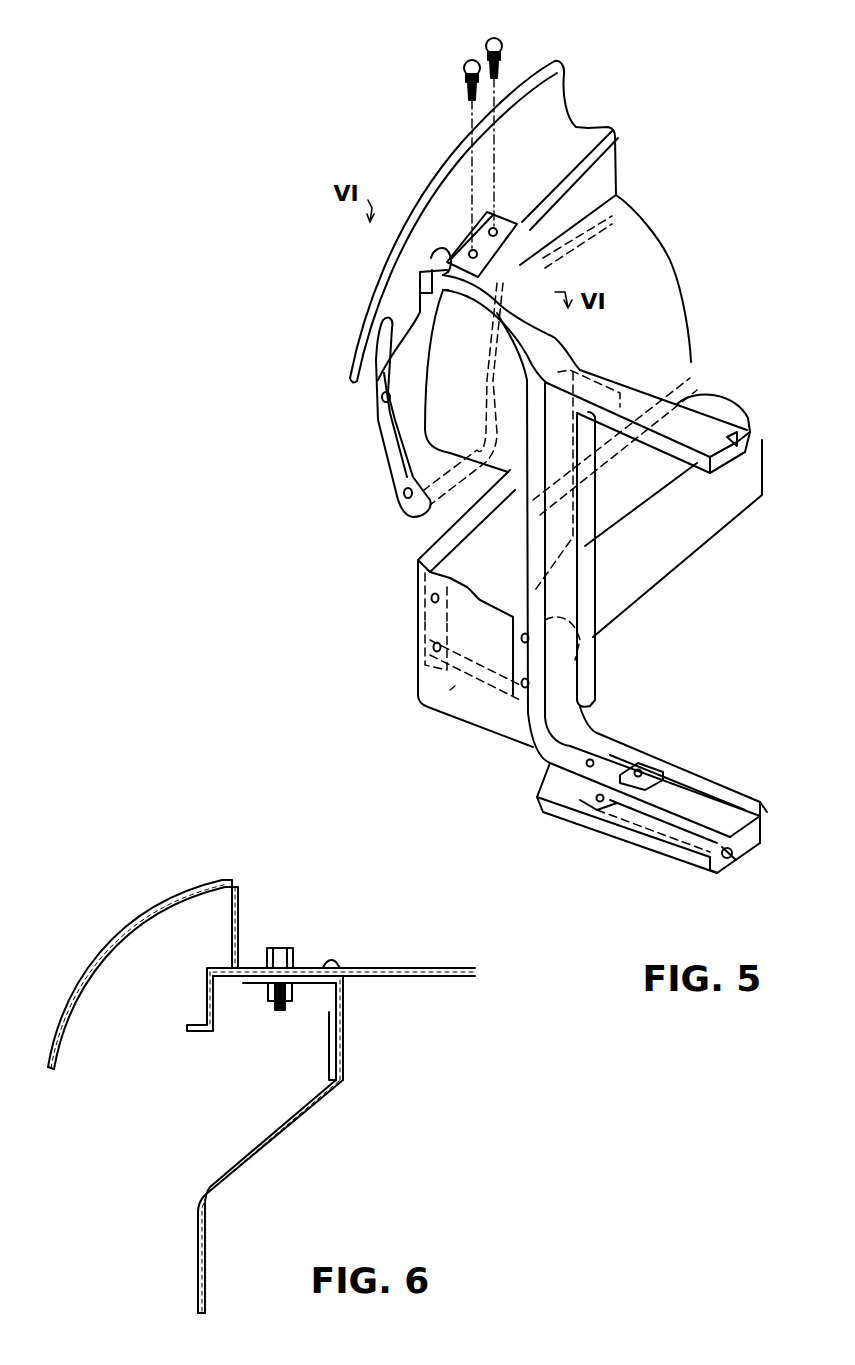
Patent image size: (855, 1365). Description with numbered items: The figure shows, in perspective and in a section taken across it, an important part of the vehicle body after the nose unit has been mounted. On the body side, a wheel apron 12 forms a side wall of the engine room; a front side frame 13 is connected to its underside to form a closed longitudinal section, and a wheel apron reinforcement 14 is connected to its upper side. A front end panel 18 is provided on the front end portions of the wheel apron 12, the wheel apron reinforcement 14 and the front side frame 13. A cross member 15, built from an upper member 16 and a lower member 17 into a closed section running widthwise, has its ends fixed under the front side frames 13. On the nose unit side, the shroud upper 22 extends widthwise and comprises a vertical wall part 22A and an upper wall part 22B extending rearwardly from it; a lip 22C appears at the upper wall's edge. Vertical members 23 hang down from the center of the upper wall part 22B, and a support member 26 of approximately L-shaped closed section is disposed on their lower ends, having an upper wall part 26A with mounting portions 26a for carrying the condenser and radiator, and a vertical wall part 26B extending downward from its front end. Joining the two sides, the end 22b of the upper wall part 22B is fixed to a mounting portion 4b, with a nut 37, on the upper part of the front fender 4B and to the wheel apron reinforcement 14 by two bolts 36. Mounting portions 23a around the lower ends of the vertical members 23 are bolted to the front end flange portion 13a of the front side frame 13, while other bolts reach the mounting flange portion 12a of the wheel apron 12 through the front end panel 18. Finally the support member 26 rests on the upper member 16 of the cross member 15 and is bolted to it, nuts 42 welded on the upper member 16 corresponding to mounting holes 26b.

In FIG. 5, the side sill outer panel 4B is at (430, 186).
In FIG. 6, the side sill outer panel 4B is at (240, 878).
In FIG. 5, the mounting portion 4b is at (504, 192).
In FIG. 6, the mounting portion 4b is at (334, 955).
In FIG. 5, the wheel apron 12 is at (680, 280).
In FIG. 6, the wheel apron 12 is at (243, 1165).
In FIG. 5, the mounting flange portion 12a is at (420, 622).
In FIG. 5, the front side frame 13 is at (673, 538).
In FIG. 5, the front end flange portion 13a is at (597, 590).
In FIG. 5, the wheel apron reinforcement 14 is at (620, 138).
In FIG. 6, the wheel apron reinforcement 14 is at (345, 1032).
In FIG. 5, the cross member 15 is at (765, 812).
In FIG. 5, the upper member 16 is at (762, 822).
In FIG. 5, the lower member 17 is at (758, 848).
In FIG. 5, the front end panel 18 is at (418, 705).
In FIG. 5, the shroud upper 22 is at (687, 444).
In FIG. 6, the shroud upper 22 is at (418, 968).
In FIG. 5, the vertical wall part 22A is at (700, 470).
In FIG. 5, the upper wall part 22B is at (732, 447).
In FIG. 5, the rail upper flange 22C is at (752, 434).
In FIG. 5, the end of upper wall part 22b is at (448, 291).
In FIG. 6, the end of upper wall part 22b is at (210, 972).
In FIG. 5, the vertical member 23 is at (597, 668).
In FIG. 5, the mounting portion 23a is at (448, 703).
In FIG. 5, the support member 26 is at (676, 805).
In FIG. 5, the upper wall part 26A is at (640, 832).
In FIG. 5, the vertical wall part 26B is at (688, 772).
In FIG. 5, the mounting portion 26a is at (648, 760).
In FIG. 5, the mounting hole 26b is at (597, 760).
In FIG. 5, the bolt 36 is at (466, 60).
In FIG. 6, the bolt 36 is at (285, 948).
In FIG. 6, the nut 37 is at (268, 995).
In FIG. 5, the nut 42 is at (748, 866).